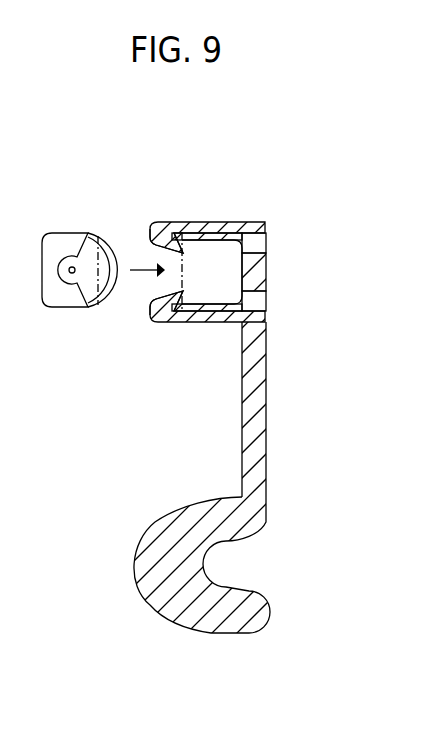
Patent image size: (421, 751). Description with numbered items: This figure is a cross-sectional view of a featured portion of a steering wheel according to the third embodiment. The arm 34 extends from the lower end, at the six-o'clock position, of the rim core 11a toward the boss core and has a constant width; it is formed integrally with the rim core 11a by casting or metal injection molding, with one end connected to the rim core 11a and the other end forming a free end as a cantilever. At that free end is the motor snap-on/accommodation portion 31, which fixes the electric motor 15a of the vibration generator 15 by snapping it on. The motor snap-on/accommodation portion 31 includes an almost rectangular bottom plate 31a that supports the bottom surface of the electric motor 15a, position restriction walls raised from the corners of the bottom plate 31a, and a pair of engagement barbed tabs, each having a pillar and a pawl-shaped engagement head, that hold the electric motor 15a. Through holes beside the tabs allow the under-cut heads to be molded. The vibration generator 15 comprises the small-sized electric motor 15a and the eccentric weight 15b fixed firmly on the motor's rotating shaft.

The vibration generator 15 is at (107, 250).
The electric motor 15a is at (62, 245).
The eccentric weight 15b is at (95, 262).
The motor snap-on/accommodation portion 31 is at (210, 375).
The bottom plate 31a is at (258, 268).
The arm 34 is at (258, 398).
The rim core 11a is at (221, 612).